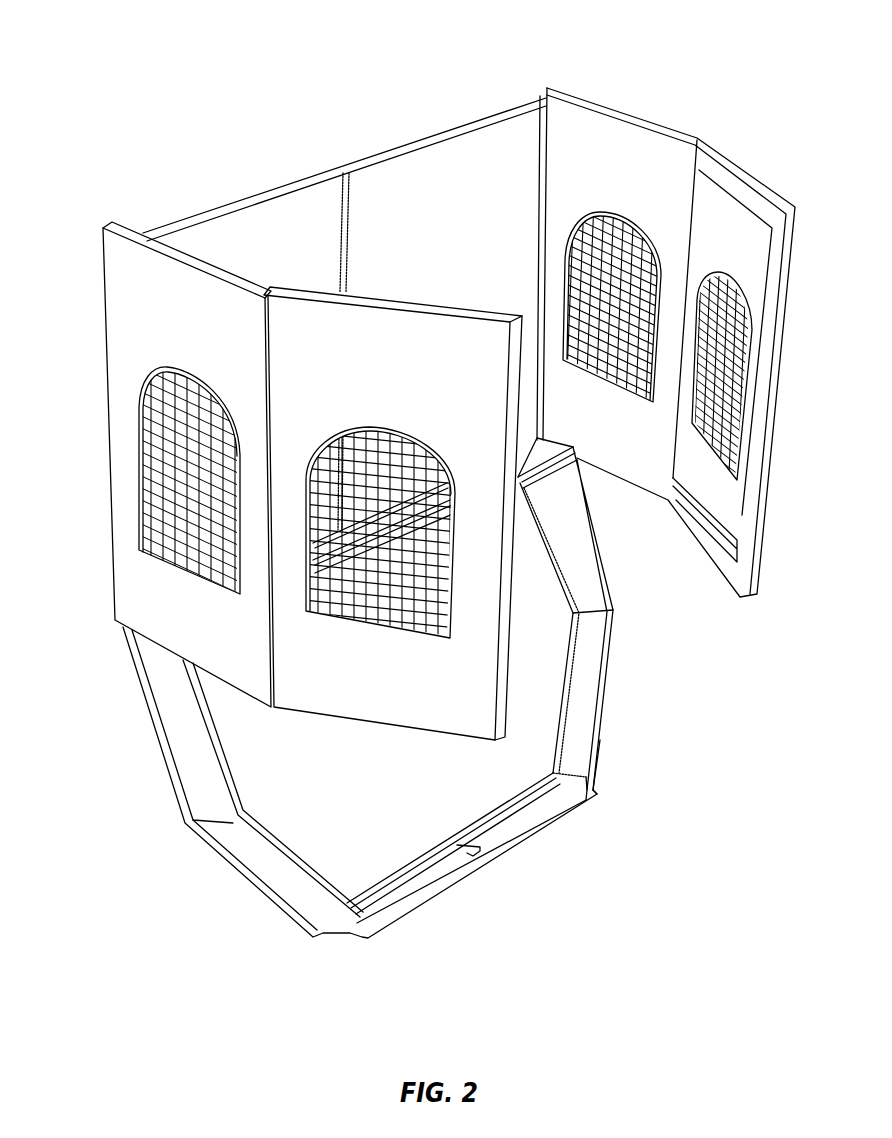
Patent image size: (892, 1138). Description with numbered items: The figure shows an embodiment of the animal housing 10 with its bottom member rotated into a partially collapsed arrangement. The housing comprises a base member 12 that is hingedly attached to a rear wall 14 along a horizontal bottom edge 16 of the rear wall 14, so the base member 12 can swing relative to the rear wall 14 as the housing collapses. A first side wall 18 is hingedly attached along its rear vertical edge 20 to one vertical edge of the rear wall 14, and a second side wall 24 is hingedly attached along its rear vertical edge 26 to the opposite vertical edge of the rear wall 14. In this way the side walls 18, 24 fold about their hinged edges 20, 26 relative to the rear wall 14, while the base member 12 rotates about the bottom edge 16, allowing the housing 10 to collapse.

The animal housing 10 is at (138, 48).
The base member 12 is at (246, 856).
The rear wall 14 is at (334, 175).
The horizontal bottom edge 16 is at (528, 440).
The first side wall 18 is at (122, 285).
The rear vertical edge 20 is at (118, 441).
The second side wall 24 is at (640, 110).
The rear vertical edge 26 is at (540, 96).